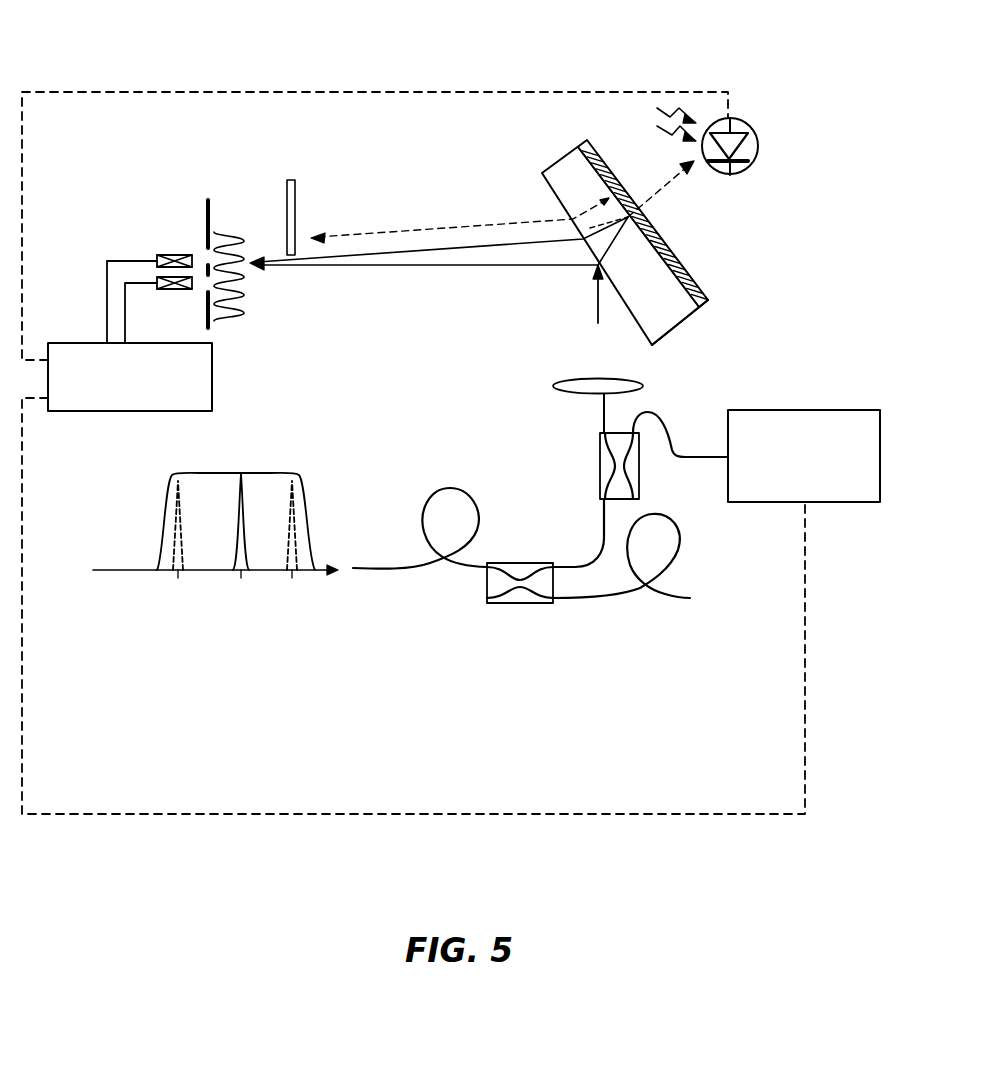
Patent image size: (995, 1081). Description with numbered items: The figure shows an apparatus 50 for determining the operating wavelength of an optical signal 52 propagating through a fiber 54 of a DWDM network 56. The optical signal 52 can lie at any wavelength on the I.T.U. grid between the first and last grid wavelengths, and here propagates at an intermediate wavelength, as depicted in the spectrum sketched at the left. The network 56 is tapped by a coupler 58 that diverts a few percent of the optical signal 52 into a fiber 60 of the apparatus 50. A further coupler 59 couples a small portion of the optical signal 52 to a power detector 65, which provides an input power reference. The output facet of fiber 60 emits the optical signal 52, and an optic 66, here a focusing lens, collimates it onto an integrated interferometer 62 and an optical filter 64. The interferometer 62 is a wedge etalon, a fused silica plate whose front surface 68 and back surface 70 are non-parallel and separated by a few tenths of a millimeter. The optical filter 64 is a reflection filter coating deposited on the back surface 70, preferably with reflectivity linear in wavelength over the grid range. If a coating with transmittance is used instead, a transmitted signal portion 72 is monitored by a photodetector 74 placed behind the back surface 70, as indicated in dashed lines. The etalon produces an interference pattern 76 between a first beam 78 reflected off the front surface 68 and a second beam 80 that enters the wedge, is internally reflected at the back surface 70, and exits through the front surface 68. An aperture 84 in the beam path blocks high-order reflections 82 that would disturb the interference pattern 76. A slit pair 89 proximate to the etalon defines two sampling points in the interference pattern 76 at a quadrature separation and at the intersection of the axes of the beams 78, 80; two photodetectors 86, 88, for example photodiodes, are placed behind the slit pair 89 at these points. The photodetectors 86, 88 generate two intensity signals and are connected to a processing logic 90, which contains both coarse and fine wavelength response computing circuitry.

The apparatus 50 is at (148, 48).
The optical signal 52 is at (595, 306).
The fiber 54 is at (410, 573).
The DWDM network 56 is at (578, 672).
The coupler 58 is at (528, 561).
The coupler 59 is at (599, 457).
The fiber 60 is at (603, 539).
The integrated interferometer 62 is at (683, 318).
The optical filter 64 is at (690, 273).
The power detector 65 is at (815, 409).
The optic 66 is at (558, 389).
The front surface 68 is at (632, 325).
The back surface 70 is at (581, 164).
The transmitted signal portion 72 is at (667, 181).
The photodetector 74 is at (758, 141).
The interference pattern 76 is at (238, 293).
The first beam 78 is at (377, 267).
The second beam 80 is at (493, 249).
The high-order reflections 82 is at (430, 228).
The aperture 84 is at (296, 190).
The photodetector 86 is at (173, 254).
The photodetector 88 is at (173, 290).
The slit pair 89 is at (210, 212).
The processing logic 90 is at (212, 384).